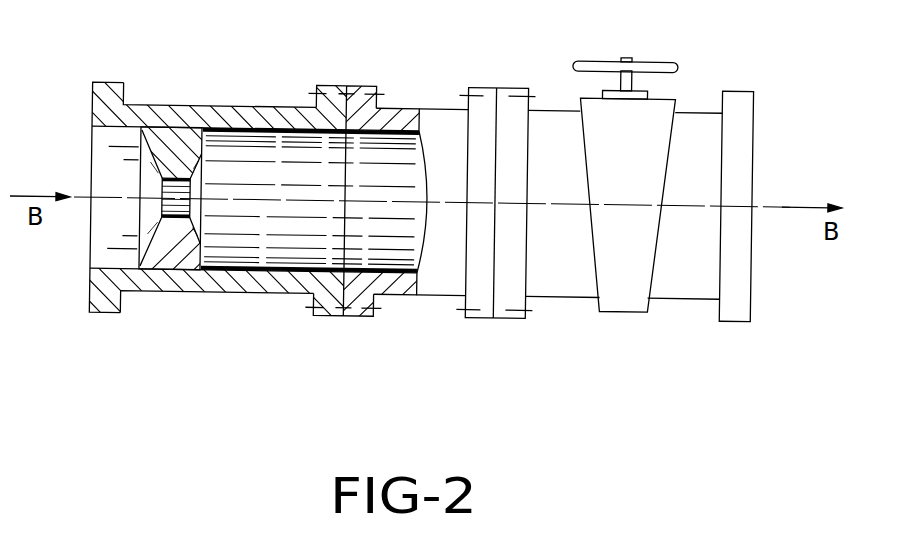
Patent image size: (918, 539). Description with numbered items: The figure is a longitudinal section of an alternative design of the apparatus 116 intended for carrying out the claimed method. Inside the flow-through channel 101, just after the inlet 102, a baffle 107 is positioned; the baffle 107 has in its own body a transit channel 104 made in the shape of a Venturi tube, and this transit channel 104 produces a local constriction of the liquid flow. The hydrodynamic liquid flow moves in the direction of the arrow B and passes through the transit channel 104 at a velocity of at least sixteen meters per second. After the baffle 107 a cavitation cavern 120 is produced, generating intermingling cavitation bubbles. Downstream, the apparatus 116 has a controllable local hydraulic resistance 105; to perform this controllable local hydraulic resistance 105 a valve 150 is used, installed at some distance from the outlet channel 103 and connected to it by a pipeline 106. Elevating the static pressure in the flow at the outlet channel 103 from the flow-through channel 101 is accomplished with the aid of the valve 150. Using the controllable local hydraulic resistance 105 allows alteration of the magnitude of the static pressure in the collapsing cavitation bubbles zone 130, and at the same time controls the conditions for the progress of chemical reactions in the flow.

The flow-through channel 101 is at (245, 113).
The inlet 102 is at (97, 167).
The outlet channel 103 is at (333, 175).
The transit channel 104 is at (170, 177).
The controllable local hydraulic resistance 105 is at (603, 150).
The pipeline 106 is at (377, 158).
The baffle 107 is at (174, 140).
The apparatus 116 is at (159, 326).
The cavitation cavern 120 is at (245, 223).
The collapsing cavitation bubbles zone 130 is at (383, 228).
The valve 150 is at (621, 67).